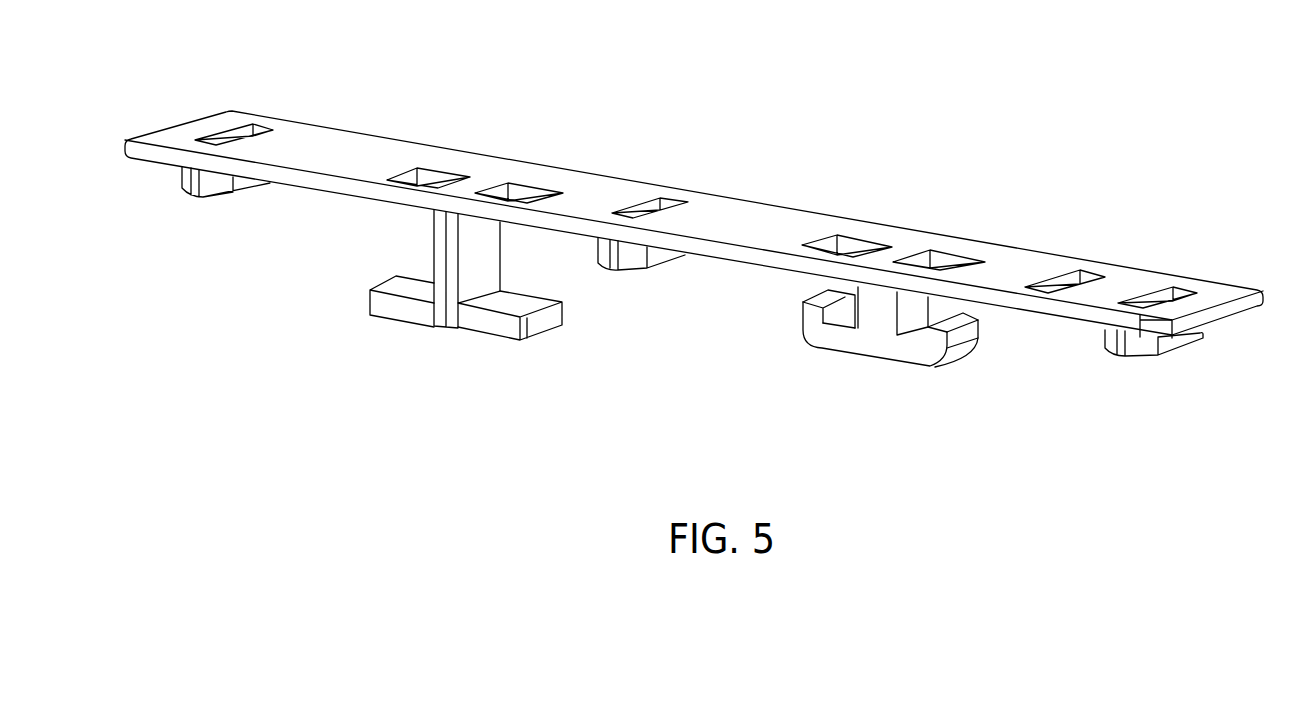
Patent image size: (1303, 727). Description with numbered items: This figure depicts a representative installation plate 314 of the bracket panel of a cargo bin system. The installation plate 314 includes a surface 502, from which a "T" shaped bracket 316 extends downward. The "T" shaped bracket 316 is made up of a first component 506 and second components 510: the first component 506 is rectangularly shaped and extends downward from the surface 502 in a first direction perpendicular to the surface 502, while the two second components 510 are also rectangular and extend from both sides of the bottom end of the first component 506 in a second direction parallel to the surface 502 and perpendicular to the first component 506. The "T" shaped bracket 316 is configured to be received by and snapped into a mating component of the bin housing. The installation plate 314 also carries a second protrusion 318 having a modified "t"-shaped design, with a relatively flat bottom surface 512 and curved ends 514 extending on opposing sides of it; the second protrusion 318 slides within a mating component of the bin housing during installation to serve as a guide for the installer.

The installation plate 314 is at (702, 249).
The surface 502 is at (303, 127).
The first component 506 is at (435, 252).
The second component 510 is at (376, 318).
The "T" shaped bracket 316 is at (476, 315).
The curved ends 514 is at (803, 322).
The flat bottom surface 512 is at (918, 358).
The second protrusion 318 is at (891, 363).